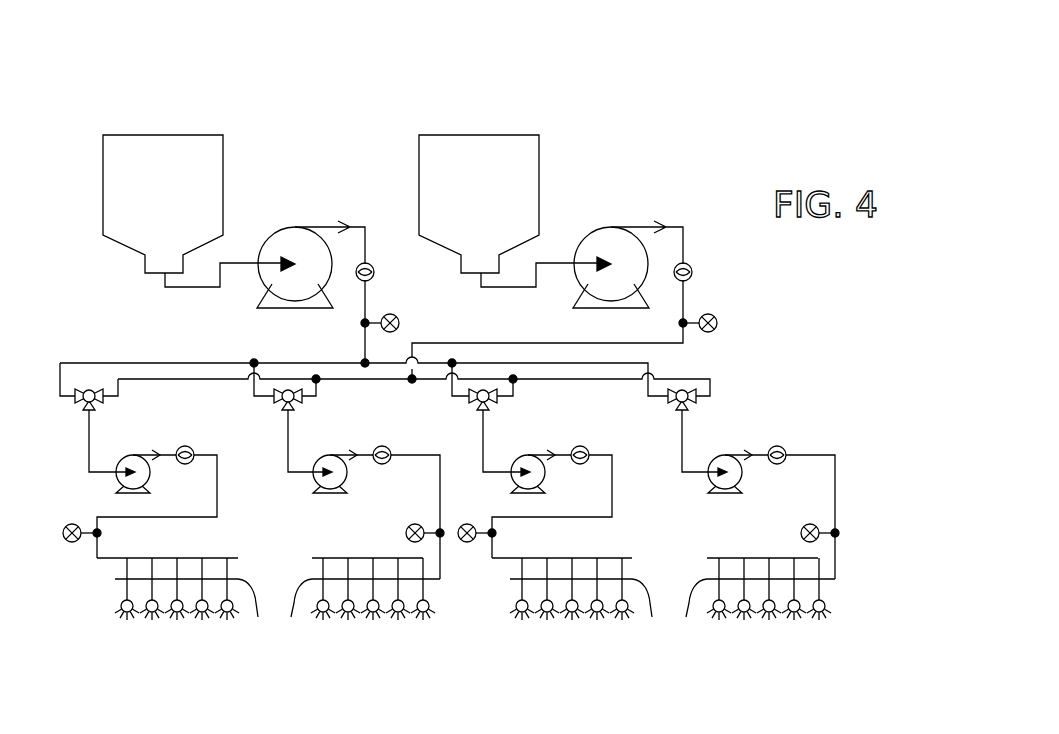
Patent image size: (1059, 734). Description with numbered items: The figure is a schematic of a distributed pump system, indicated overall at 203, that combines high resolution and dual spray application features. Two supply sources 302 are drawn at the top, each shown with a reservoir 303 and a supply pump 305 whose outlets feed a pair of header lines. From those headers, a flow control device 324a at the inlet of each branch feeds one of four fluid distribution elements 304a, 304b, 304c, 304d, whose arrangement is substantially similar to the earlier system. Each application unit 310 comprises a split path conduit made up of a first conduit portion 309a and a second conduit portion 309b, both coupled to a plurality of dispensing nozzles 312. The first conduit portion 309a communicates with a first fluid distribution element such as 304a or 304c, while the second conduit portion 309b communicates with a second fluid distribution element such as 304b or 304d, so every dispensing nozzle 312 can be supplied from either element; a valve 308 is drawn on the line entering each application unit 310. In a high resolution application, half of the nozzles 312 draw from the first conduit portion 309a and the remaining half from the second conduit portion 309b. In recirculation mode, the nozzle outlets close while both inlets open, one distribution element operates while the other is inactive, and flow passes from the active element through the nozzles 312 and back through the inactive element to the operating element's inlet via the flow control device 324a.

The fluid distribution system 203 is at (770, 73).
The supply source 302 is at (287, 141).
The reservoir tank 303 is at (143, 199).
The supply pump 305 is at (264, 237).
The flow control device 324a is at (94, 371).
The fluid distribution element 304a is at (122, 456).
The fluid distribution element 304b is at (319, 456).
The fluid distribution element 304c is at (517, 456).
The fluid distribution element 304d is at (714, 456).
The drain valve 308 is at (69, 498).
The first conduit portion 309a is at (143, 557).
The second conduit portion 309b is at (475, 613).
The application unit 310 is at (87, 570).
The dispensing nozzle 312 is at (163, 628).